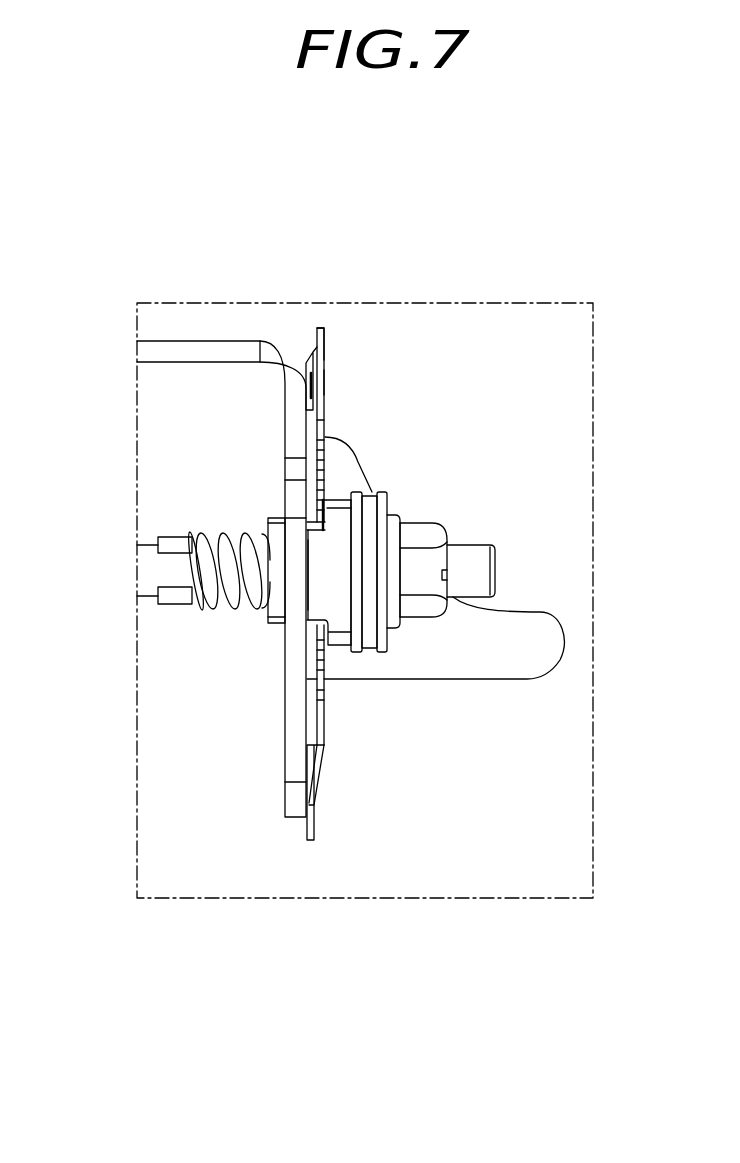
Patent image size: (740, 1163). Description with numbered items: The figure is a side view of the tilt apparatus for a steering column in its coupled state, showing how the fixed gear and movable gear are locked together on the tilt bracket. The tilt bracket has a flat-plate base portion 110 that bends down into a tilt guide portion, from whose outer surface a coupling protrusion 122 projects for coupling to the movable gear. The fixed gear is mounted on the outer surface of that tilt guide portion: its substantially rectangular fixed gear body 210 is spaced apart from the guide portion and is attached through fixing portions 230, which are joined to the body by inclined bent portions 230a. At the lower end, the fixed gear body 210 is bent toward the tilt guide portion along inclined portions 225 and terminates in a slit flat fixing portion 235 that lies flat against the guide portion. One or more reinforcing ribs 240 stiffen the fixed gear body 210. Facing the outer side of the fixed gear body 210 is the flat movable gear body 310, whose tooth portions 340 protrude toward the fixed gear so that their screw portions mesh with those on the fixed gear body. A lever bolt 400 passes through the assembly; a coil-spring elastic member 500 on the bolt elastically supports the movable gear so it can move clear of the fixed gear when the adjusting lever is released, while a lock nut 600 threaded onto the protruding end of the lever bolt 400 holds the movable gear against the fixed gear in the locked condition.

The base portion 110 is at (208, 352).
The coupling protrusion 122 is at (323, 382).
The fixed gear body 210 is at (325, 352).
The inclined portion 225 is at (307, 770).
The fixing portion 230 is at (307, 390).
The bent portion 230a is at (312, 358).
The flat fixing portion 235 is at (316, 817).
The reinforcing rib 240 is at (278, 613).
The movable gear body 310 is at (322, 632).
The tooth portion 340 is at (315, 592).
The lever bolt 400 is at (483, 560).
The elastic member 500 is at (213, 543).
The lock nut 600 is at (417, 532).